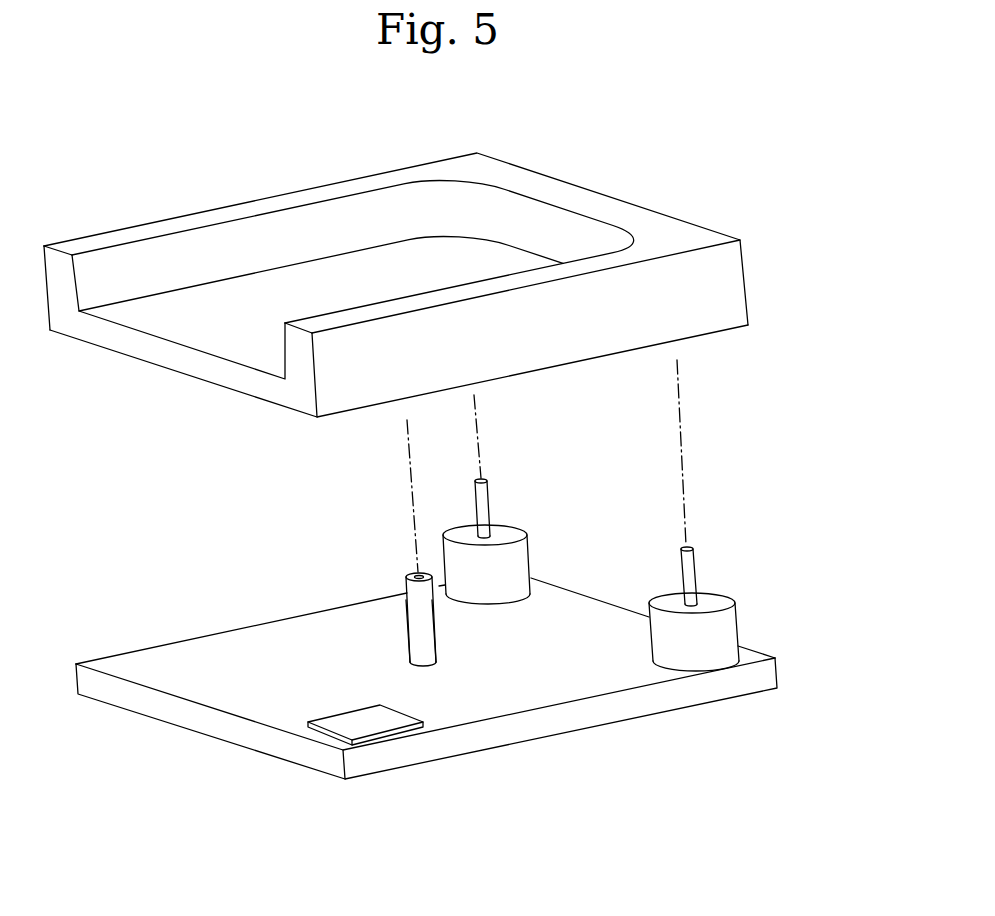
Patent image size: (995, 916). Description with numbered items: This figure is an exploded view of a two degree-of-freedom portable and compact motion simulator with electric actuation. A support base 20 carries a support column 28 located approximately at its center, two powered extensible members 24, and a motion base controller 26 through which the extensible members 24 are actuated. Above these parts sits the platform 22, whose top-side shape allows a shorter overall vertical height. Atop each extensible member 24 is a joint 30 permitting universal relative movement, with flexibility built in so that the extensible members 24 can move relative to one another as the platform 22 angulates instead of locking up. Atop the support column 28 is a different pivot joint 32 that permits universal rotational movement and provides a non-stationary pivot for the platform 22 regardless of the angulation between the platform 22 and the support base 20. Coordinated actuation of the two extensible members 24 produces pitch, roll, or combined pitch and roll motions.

The support base 20 is at (310, 768).
The platform 22 is at (747, 268).
The extensible members 24 is at (532, 554).
The motion base controller 26 is at (397, 730).
The support column 28 is at (400, 598).
The joints 30 is at (490, 478).
The pivot joint 32 is at (413, 573).